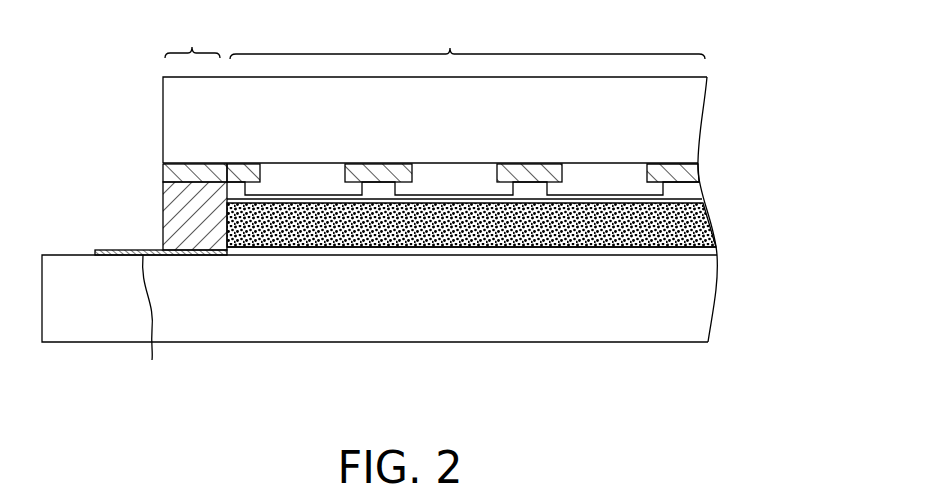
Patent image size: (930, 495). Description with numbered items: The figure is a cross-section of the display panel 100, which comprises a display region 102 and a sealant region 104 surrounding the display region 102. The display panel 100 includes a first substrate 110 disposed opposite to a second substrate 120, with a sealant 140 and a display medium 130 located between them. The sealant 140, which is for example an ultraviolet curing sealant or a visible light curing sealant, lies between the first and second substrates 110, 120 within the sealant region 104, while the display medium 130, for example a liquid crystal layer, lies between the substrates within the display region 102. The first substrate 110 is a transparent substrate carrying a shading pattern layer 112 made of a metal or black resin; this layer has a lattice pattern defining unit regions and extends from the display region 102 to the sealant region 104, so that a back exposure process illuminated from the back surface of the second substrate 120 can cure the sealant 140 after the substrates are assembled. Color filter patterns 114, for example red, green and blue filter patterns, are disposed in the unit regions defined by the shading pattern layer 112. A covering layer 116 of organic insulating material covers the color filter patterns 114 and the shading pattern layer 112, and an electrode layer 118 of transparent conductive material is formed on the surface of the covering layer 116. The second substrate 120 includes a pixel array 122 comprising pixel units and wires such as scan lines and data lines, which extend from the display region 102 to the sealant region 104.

The display panel 100 is at (414, 215).
The display region 102 is at (467, 39).
The sealant region 104 is at (192, 37).
The first substrate 110 is at (687, 105).
The shading pattern layer 112 is at (170, 173).
The color filter patterns 114 is at (210, 183).
The covering layer 116 is at (693, 187).
The electrode layer 118 is at (703, 207).
The second substrate 120 is at (697, 313).
The pixel array 122 is at (712, 253).
The display medium 130 is at (705, 228).
The sealant 140 is at (175, 221).